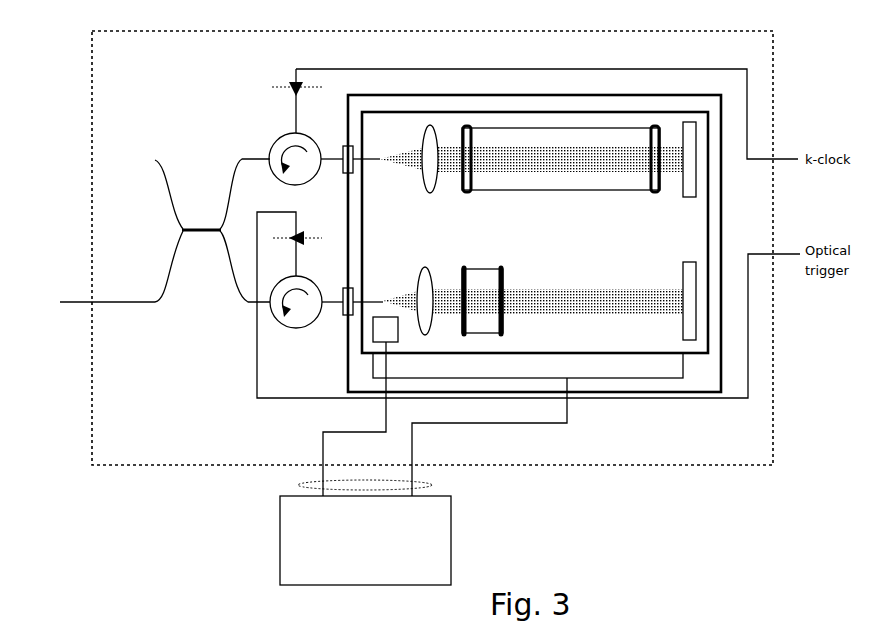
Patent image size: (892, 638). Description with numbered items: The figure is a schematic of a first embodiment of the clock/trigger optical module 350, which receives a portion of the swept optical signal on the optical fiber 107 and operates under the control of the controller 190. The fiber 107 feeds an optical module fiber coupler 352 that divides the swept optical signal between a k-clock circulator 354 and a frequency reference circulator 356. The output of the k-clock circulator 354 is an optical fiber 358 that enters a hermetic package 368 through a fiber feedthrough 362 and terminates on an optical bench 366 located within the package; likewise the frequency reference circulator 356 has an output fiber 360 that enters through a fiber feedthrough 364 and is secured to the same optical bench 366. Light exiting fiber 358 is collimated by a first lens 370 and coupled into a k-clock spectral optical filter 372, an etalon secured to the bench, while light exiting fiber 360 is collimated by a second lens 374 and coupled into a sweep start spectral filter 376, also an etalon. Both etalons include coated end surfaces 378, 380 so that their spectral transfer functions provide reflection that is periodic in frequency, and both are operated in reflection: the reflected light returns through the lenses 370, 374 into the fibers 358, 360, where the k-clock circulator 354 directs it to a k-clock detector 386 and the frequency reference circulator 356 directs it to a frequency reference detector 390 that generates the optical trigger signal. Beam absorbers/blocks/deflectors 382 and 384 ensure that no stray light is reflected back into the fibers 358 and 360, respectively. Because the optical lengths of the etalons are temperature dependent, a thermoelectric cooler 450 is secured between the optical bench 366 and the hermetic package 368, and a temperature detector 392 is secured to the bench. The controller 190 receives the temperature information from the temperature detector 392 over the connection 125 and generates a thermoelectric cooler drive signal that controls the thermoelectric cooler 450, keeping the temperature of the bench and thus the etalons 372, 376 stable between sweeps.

The optical fiber 107 is at (78, 300).
The controller cable 125 is at (298, 487).
The controller 190 is at (365, 540).
The clock/trigger optical module 350 is at (432, 248).
The optical module fiber coupler 352 is at (172, 233).
The k-clock circulator 354 is at (278, 140).
The frequency reference circulator 356 is at (282, 322).
The optical fiber 358 is at (330, 157).
The output fiber 360 is at (333, 297).
The fiber feedthrough 362 is at (354, 147).
The fiber feedthrough 364 is at (354, 288).
The optical bench 366 is at (692, 354).
The hermetic package 368 is at (723, 351).
The first lens 370 is at (428, 191).
The k-clock spectral optical filter 372 is at (545, 190).
The second lens 374 is at (425, 266).
The sweep start spectral filter 376 is at (487, 271).
The coated end surface 378 is at (462, 193).
The coated end surface 380 is at (650, 195).
The beam absorber/block/deflector 382 is at (688, 198).
The beam absorber/block/deflector 384 is at (683, 268).
The k-clock detector 386 is at (291, 86).
The frequency reference detector 390 is at (289, 235).
The temperature detector 392 is at (373, 343).
The thermoelectric cooler 450 is at (528, 365).